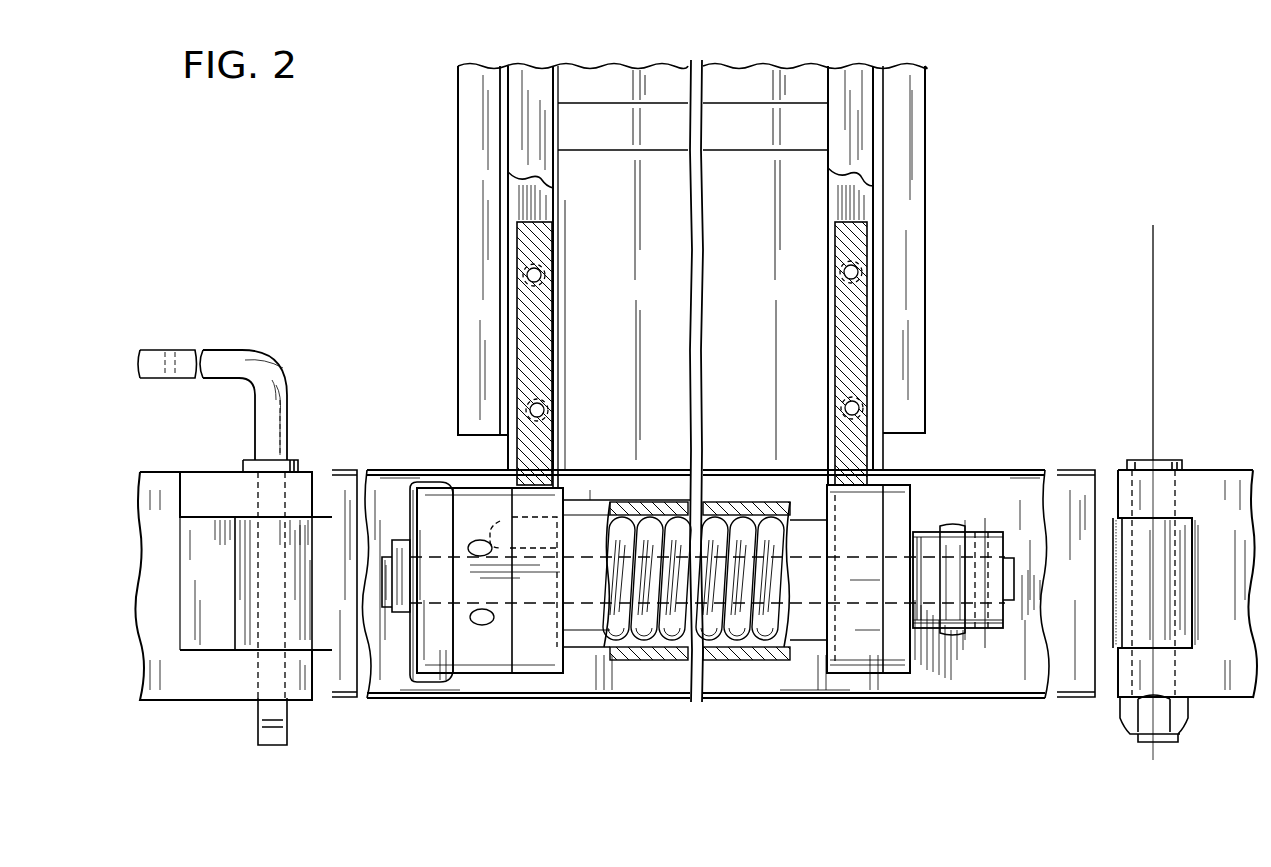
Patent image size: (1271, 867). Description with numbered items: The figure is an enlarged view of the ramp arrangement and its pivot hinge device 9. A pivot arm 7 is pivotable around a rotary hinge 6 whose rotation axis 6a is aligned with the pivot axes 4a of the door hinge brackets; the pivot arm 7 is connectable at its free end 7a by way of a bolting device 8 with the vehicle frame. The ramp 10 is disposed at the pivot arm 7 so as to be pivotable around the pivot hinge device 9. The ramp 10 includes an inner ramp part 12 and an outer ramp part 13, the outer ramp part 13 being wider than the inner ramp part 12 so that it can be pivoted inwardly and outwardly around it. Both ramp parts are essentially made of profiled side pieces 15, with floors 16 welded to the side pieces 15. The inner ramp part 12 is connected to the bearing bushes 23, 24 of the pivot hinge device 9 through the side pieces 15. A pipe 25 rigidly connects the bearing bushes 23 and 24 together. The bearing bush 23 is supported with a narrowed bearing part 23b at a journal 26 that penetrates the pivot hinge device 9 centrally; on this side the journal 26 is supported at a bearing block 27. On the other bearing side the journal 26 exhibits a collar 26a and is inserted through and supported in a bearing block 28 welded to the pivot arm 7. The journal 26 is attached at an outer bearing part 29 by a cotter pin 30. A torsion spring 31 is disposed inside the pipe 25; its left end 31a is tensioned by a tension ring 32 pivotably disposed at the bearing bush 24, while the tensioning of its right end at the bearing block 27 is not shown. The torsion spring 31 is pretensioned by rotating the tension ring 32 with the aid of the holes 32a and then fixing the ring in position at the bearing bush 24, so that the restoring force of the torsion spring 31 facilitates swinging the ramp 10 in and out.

The pivot axes 4a is at (1148, 262).
The rotary hinge 6 is at (1170, 492).
The rotation axis 6a is at (1155, 600).
The pivot arm 7 is at (946, 698).
The free end 7a is at (344, 562).
The bolting device 8 is at (300, 442).
The pivot hinge device 9 is at (660, 665).
The ramp 10 is at (739, 381).
The inner ramp part 12 is at (545, 177).
The outer ramp part 13 is at (909, 146).
The side pieces 15 is at (540, 129).
The floors 16 is at (629, 336).
The bearing bush 23 is at (898, 490).
The narrowed bearing part 23b is at (923, 540).
The bearing bush 24 is at (560, 490).
The pipe 25 is at (695, 583).
The journal 26 is at (1017, 568).
The collar 26a is at (394, 615).
The bearing block 27 is at (956, 542).
The bearing block 28 is at (438, 662).
The outer bearing part 29 is at (997, 626).
The cotter pin 30 is at (990, 540).
The torsion spring 31 is at (727, 662).
The left end 31a is at (520, 532).
The tension ring 32 is at (490, 619).
The holes 32a is at (487, 626).